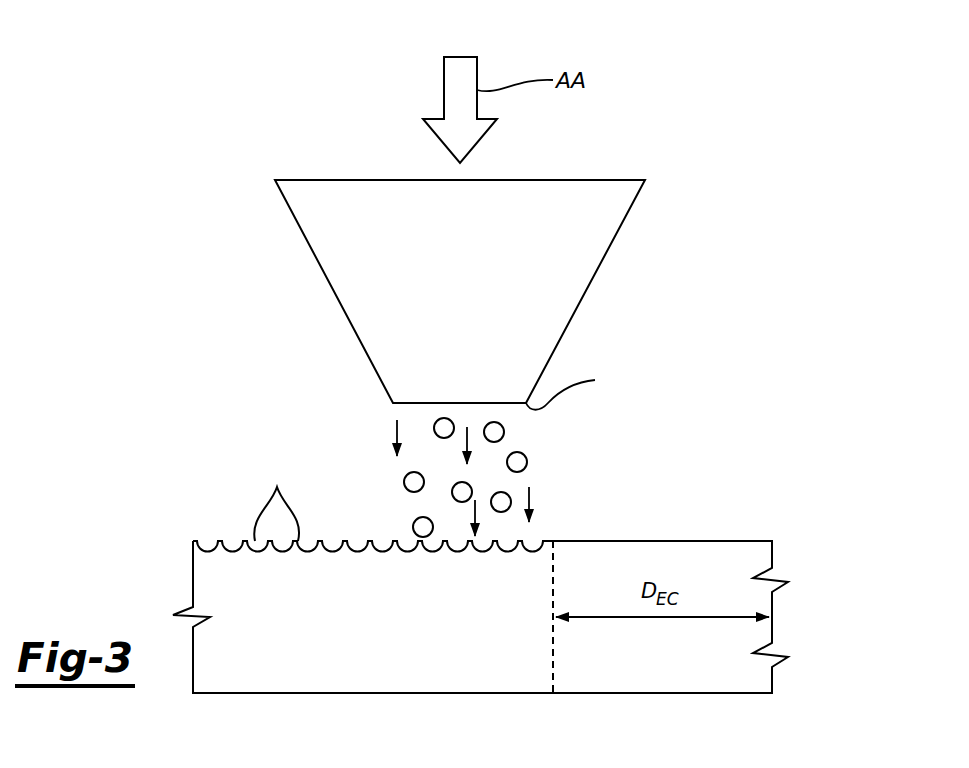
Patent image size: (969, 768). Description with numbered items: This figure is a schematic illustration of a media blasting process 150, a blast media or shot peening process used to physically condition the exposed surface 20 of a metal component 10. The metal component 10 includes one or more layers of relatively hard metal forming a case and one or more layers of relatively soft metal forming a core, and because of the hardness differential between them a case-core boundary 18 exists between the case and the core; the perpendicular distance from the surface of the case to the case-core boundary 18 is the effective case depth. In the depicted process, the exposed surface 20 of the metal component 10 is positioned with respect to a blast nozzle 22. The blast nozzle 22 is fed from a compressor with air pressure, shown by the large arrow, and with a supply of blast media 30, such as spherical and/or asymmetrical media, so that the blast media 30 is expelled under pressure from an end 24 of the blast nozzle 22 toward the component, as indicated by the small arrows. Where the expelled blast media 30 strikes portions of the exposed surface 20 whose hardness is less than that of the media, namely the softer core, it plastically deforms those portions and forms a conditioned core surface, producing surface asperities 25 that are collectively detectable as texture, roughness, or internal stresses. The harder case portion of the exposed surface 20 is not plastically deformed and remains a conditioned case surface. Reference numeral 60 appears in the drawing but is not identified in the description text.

The media blasting process 150 is at (748, 58).
The blast nozzle 22 is at (617, 233).
The end of the blast nozzle 24 is at (573, 386).
The blast media 30 is at (555, 418).
The exposed surface 20 is at (690, 477).
The surface asperities 25 is at (277, 487).
The metal component 10 is at (459, 629).
The case-core boundary 18 is at (549, 657).
The collection element 60 is at (707, 767).